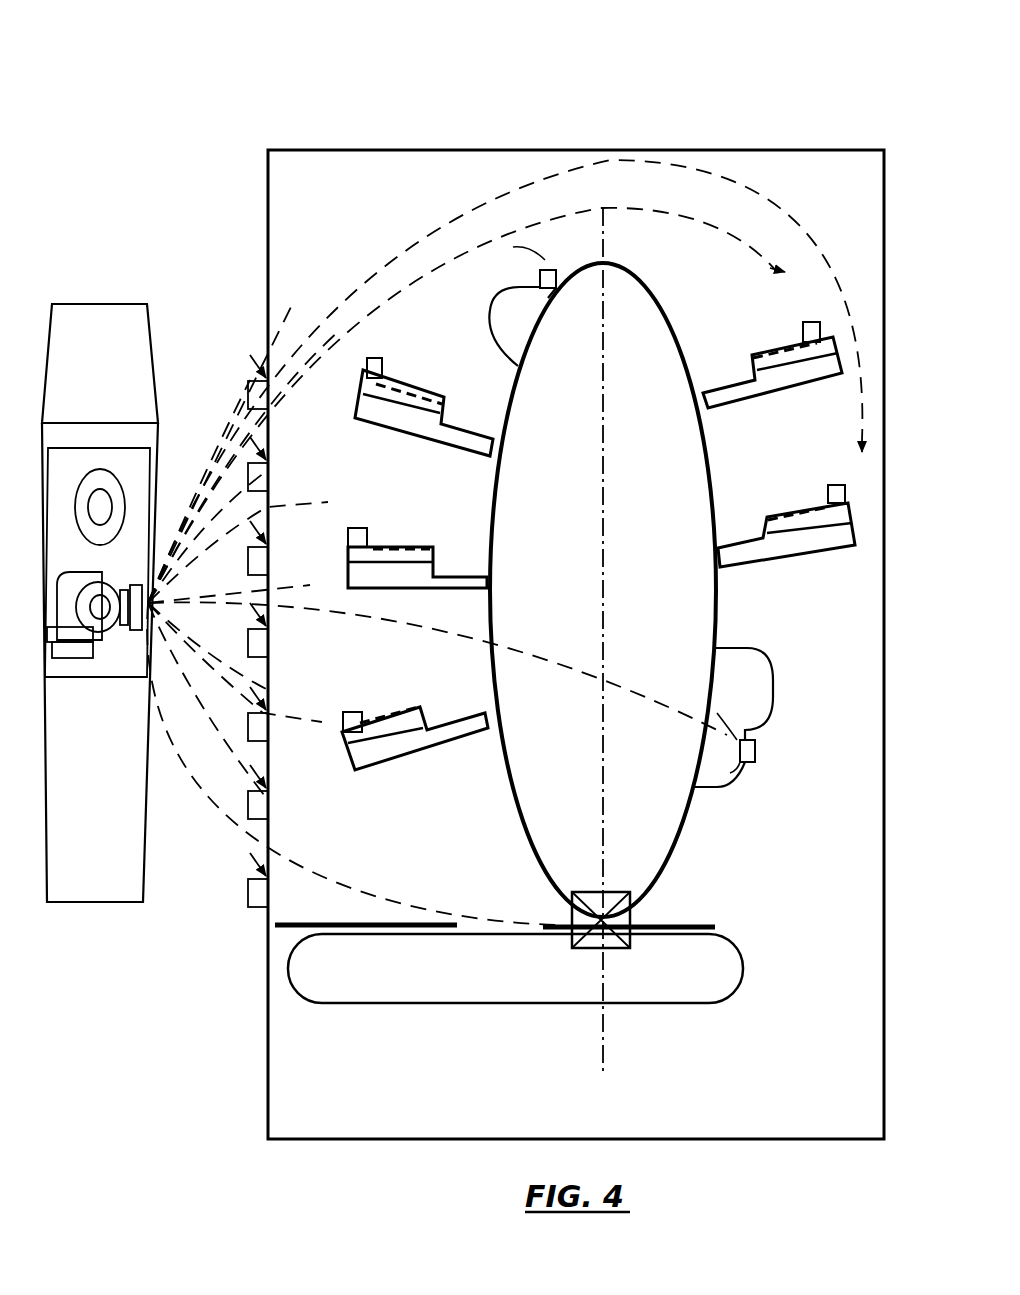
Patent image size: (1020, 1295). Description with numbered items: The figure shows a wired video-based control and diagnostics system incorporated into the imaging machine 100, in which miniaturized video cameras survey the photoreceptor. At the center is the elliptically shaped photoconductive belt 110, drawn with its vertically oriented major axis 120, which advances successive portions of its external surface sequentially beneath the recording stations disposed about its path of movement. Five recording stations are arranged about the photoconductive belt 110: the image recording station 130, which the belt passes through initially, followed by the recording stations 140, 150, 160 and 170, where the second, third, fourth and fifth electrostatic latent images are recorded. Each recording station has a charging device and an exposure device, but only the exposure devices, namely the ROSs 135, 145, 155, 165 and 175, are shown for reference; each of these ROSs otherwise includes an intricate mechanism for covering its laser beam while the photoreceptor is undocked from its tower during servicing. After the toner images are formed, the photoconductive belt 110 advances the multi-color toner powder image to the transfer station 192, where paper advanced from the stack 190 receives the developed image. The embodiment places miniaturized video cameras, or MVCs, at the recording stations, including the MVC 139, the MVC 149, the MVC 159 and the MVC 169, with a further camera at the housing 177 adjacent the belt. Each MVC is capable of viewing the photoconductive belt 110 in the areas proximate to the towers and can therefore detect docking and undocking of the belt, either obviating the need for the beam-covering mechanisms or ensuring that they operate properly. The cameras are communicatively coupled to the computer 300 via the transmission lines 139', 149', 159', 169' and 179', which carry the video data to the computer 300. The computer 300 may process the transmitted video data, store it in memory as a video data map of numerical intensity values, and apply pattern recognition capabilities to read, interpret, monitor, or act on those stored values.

The imaging machine 100 is at (644, 142).
The photoconductive belt 110 is at (620, 258).
The major axis 120 is at (603, 520).
The image recording station 130 is at (787, 499).
The ROS 135 is at (786, 535).
The miniaturized video camera 139 is at (840, 483).
The transmission line 139' is at (833, 444).
The recording station 140 is at (754, 336).
The ROS 145 is at (772, 372).
The miniaturized video camera 149 is at (818, 321).
The transmission line 149' is at (814, 291).
The recording station 150 is at (411, 382).
The ROS 155 is at (424, 413).
The miniaturized video camera 159 is at (356, 370).
The transmission line 159' is at (383, 342).
The recording station 160 is at (398, 529).
The ROS 165 is at (417, 567).
The miniaturized video camera 169 is at (338, 538).
The transmission line 169' is at (350, 501).
The recording station 170 is at (391, 705).
The ROS 175 is at (415, 736).
The sensor housing 177 is at (780, 681).
The transmission line 179' is at (318, 733).
The stack 190 is at (348, 925).
The transfer station 192 is at (590, 905).
The computer 300 is at (72, 320).